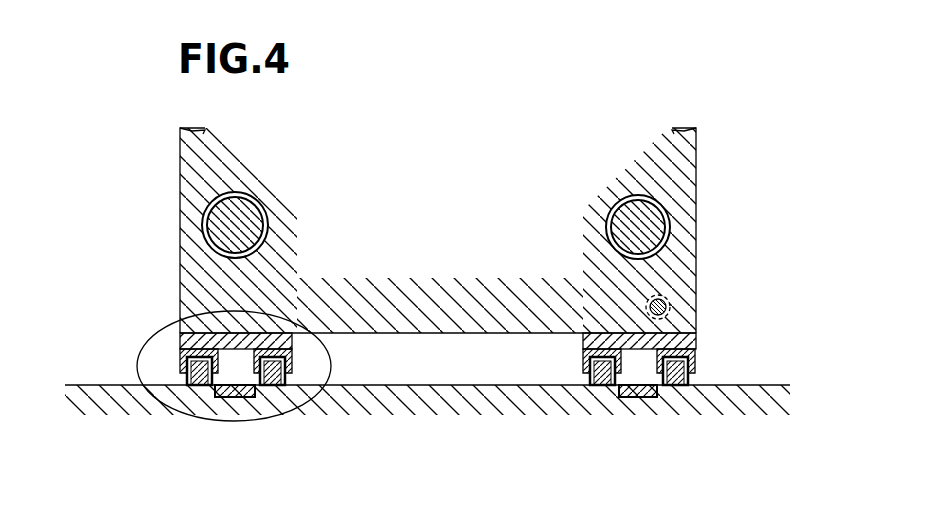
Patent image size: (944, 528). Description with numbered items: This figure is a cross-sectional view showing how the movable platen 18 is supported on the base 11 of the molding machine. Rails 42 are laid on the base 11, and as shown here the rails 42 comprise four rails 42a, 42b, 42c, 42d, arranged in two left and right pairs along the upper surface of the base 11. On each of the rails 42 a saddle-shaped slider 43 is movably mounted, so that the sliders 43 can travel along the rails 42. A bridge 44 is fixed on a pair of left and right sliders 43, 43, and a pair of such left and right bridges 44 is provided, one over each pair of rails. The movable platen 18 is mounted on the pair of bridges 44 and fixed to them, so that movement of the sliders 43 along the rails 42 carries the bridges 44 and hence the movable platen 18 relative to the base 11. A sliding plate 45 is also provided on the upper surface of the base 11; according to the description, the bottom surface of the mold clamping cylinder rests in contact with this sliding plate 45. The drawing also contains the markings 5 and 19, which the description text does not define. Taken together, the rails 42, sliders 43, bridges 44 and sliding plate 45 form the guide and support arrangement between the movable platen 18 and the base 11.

The fixing structure 5 is at (202, 417).
The base 11 is at (437, 403).
The movable platen 18 is at (438, 175).
The pipe 19 is at (232, 225).
The rails 42 is at (438, 410).
The rail 42a is at (193, 387).
The rail 42b is at (272, 388).
The rail 42c is at (604, 388).
The rail 42d is at (686, 388).
The sliders 43 is at (179, 363).
The bridge 44 is at (179, 342).
The sliding plate 45 is at (235, 398).